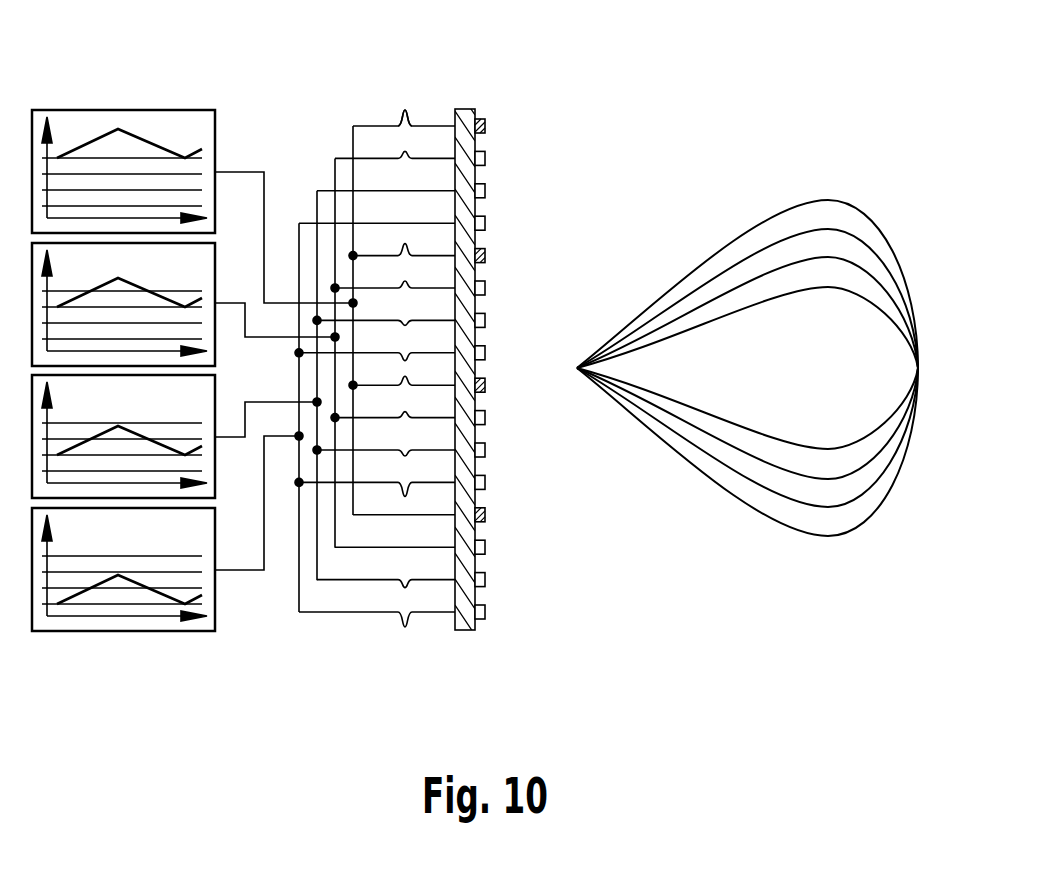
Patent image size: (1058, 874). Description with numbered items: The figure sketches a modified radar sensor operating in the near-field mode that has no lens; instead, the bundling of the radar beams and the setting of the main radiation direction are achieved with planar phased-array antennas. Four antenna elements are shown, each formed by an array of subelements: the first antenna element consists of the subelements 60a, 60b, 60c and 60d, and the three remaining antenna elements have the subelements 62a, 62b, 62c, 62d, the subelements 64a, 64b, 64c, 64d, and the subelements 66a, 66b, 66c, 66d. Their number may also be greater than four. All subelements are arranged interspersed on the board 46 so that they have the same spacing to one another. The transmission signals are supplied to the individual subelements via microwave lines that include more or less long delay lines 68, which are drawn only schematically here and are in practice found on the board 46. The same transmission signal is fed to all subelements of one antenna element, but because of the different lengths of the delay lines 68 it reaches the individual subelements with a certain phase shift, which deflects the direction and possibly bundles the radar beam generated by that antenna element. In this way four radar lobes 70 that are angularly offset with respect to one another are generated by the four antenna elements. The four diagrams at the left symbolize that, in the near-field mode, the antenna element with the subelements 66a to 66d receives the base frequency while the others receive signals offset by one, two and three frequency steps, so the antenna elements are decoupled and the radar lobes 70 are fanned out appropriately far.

The board 46 is at (465, 631).
The delay lines 68 is at (405, 109).
The radar lobes 70 is at (782, 208).
The subelement 60a is at (485, 126).
The subelement 62a is at (485, 158).
The subelement 64a is at (485, 191).
The subelement 66a is at (485, 223).
The subelement 60b is at (485, 256).
The subelement 62b is at (485, 288).
The subelement 64b is at (485, 320).
The subelement 66b is at (485, 353).
The subelement 60c is at (485, 385).
The subelement 62c is at (485, 418).
The subelement 64c is at (485, 450).
The subelement 66c is at (485, 482).
The subelement 60d is at (485, 515).
The subelement 62d is at (485, 547).
The subelement 64d is at (485, 580).
The subelement 66d is at (485, 612).